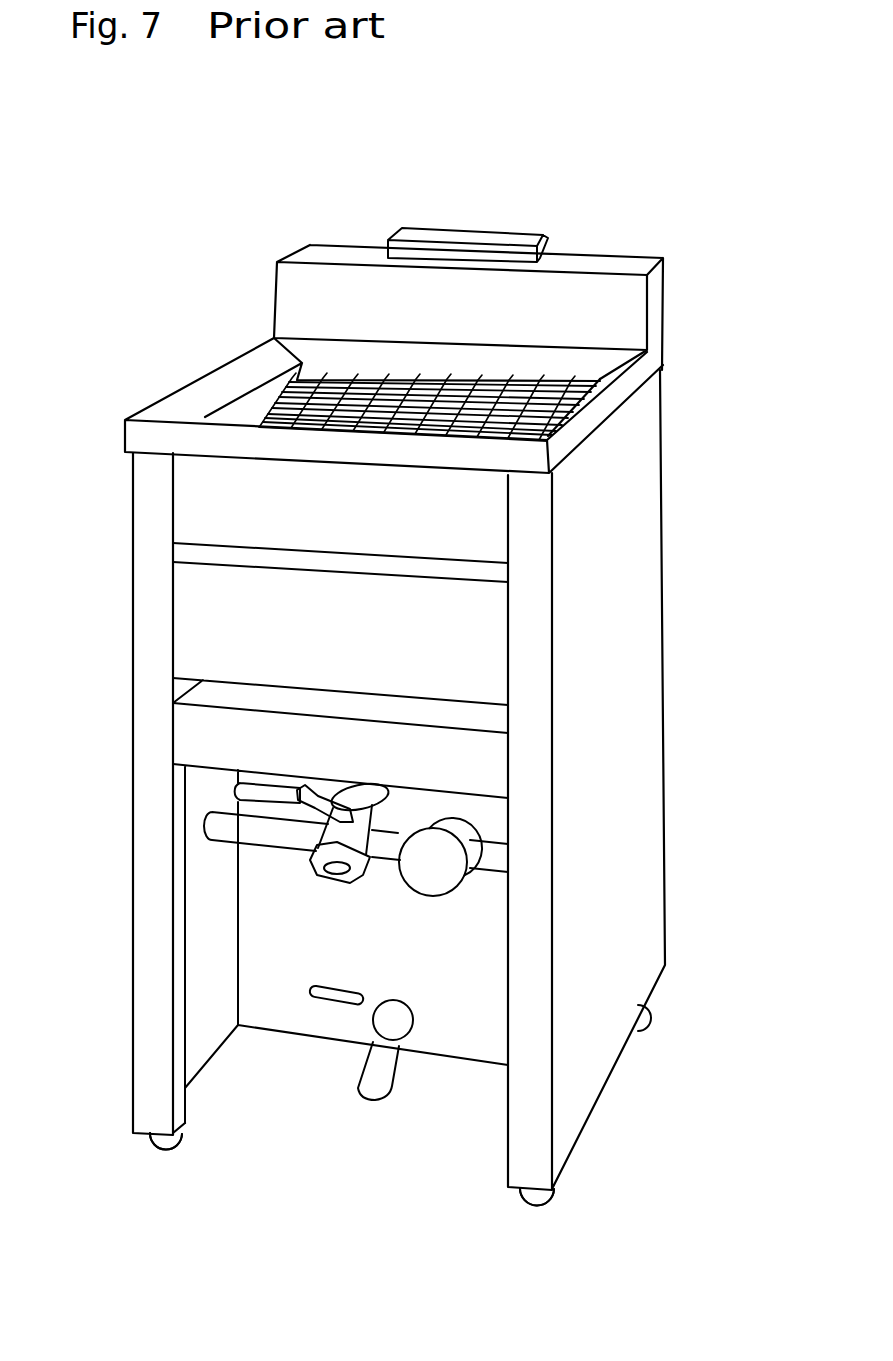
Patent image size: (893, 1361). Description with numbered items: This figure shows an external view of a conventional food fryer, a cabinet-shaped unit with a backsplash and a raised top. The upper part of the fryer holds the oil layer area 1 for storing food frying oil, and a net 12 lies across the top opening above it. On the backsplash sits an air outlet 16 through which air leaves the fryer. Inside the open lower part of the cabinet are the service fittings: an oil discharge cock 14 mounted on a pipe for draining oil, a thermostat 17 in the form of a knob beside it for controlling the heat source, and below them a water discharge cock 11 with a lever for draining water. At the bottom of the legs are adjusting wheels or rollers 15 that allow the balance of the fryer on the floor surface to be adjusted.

The oil layer area 1 is at (243, 408).
The water discharge cock 11 is at (367, 1070).
The net 12 is at (567, 392).
The oil discharge cock 14 is at (327, 884).
The adjusting wheel 15 is at (162, 1160).
The air outlet 16 is at (437, 250).
The thermostat 17 is at (445, 877).